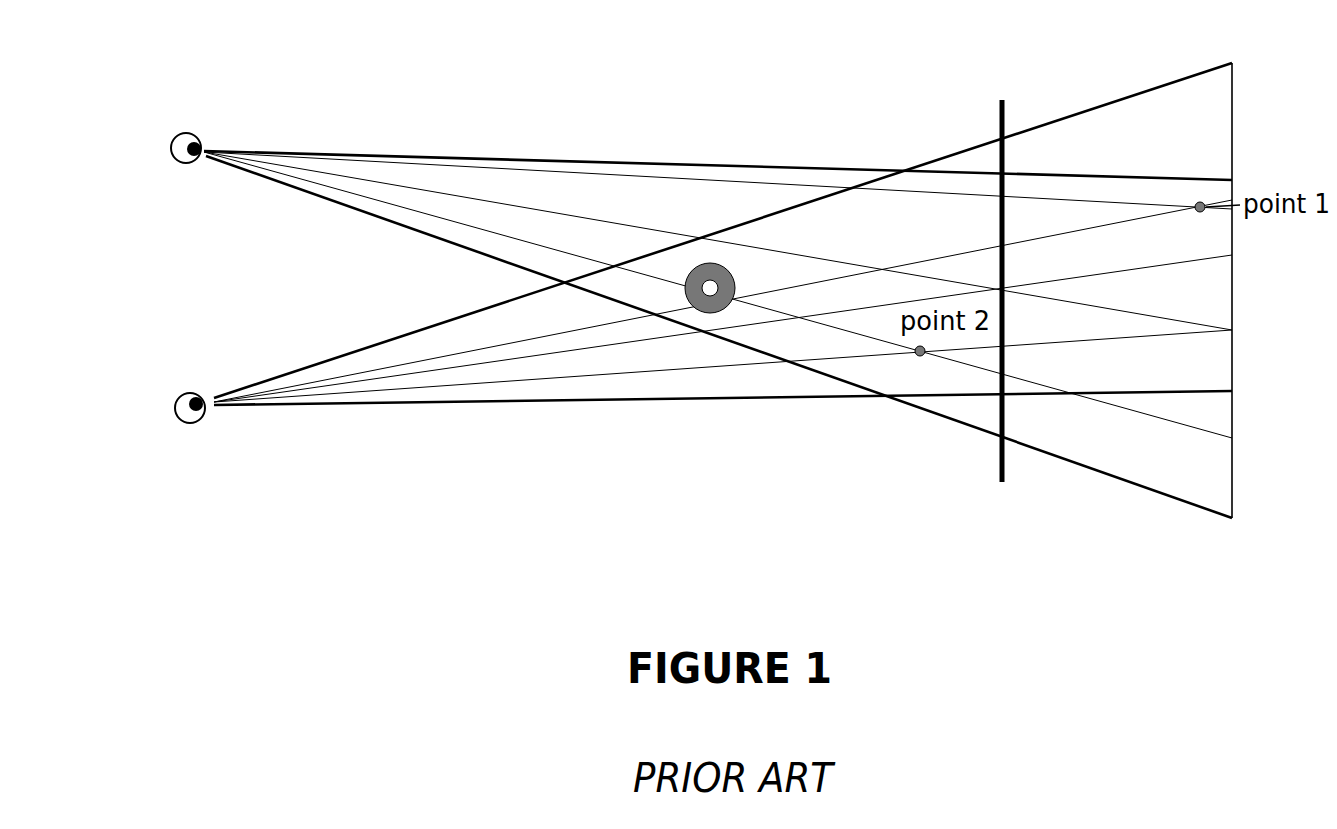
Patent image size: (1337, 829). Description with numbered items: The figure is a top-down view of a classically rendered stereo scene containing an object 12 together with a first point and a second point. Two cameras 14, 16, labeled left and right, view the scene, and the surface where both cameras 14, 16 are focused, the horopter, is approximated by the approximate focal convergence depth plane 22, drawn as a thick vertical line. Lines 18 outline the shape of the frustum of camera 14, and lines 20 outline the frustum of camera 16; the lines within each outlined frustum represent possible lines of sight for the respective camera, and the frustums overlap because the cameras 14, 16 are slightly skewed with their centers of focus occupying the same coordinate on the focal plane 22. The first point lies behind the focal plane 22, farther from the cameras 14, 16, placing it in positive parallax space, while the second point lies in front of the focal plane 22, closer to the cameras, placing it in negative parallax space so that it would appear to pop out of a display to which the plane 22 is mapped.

The object 12 is at (702, 258).
The camera 14 is at (180, 116).
The camera 16 is at (180, 436).
The lines 18 is at (318, 153).
The lines 20 is at (308, 363).
The approximate focal convergence depth plane 22 is at (998, 468).